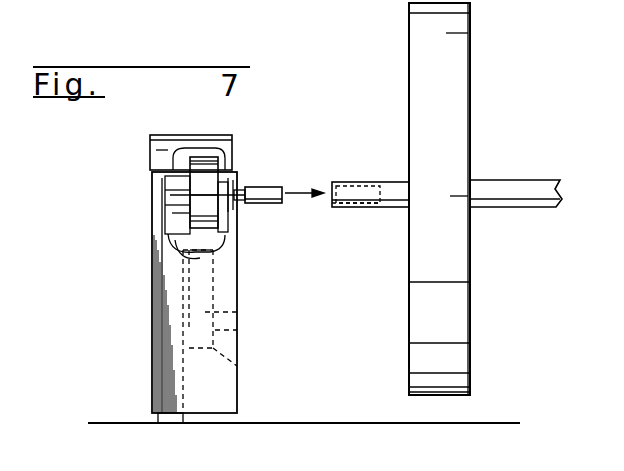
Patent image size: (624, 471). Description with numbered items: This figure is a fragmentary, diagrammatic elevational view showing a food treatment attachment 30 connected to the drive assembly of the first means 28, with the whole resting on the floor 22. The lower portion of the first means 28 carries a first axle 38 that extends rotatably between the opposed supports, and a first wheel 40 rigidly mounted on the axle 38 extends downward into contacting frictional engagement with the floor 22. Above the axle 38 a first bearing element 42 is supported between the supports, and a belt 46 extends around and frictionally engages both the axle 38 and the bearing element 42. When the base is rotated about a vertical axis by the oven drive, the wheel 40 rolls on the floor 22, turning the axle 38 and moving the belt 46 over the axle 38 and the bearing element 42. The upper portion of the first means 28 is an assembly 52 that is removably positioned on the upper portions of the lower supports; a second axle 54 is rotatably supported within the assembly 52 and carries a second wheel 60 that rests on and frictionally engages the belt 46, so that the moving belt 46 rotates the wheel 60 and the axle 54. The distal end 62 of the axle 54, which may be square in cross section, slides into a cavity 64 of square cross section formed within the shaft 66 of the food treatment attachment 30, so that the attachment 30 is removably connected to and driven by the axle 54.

The floor 22 is at (300, 422).
The first means 28 is at (139, 297).
The food treatment attachment 30 is at (462, 322).
The first axle 38 is at (237, 366).
The first wheel 40 is at (165, 421).
The first bearing element 42 is at (175, 236).
The belt 46 is at (237, 318).
The assembly 52 is at (232, 152).
The second axle 54 is at (254, 205).
The second wheel 60 is at (207, 162).
The distal end 62 is at (346, 258).
The cavity 64 is at (360, 208).
The shaft 66 is at (390, 208).